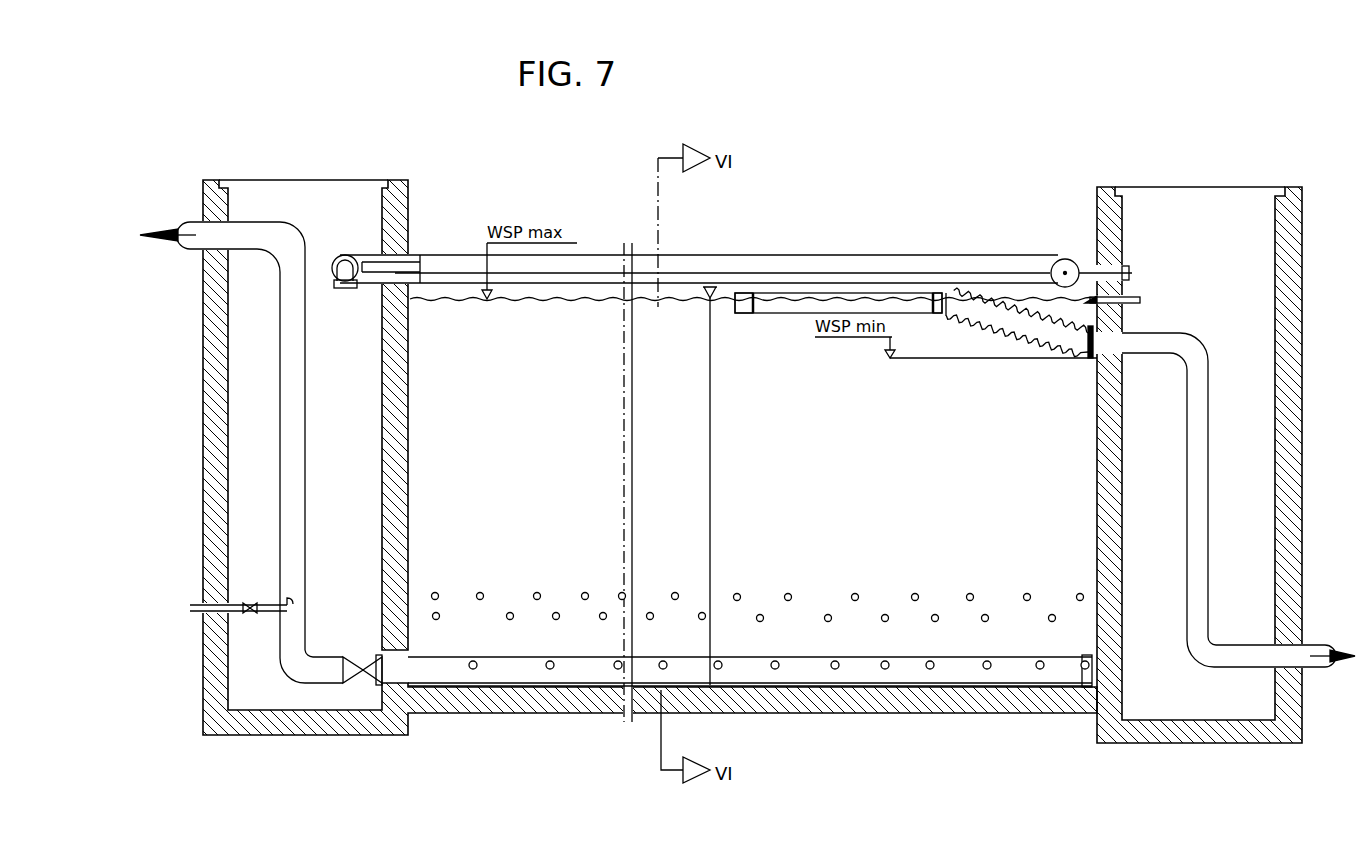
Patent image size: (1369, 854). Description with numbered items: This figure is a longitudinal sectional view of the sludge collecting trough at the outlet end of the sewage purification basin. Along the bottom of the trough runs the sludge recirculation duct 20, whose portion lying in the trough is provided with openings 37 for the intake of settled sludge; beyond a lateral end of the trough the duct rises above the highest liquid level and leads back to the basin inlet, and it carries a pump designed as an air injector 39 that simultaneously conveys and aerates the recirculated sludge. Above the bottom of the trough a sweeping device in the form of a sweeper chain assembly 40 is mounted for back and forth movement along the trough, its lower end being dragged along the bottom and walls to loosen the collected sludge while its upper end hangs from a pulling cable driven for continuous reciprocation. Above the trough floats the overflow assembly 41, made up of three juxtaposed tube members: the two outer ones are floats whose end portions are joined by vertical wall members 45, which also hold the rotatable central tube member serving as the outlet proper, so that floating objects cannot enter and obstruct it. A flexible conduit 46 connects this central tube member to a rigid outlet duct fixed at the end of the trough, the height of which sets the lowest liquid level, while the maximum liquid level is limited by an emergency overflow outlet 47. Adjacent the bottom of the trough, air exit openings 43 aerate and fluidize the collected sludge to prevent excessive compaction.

The sludge recirculation duct 20 is at (800, 672).
The openings 37 is at (550, 661).
The air injector 39 is at (274, 601).
The sweeper chain assembly 40 is at (712, 407).
The floating overflow assembly 41 is at (856, 300).
The air exit openings 43 is at (1024, 596).
The vertical wall members 45 is at (934, 297).
The flexible conduit 46 is at (1002, 326).
The emergency overflow outlet 47 is at (1120, 297).